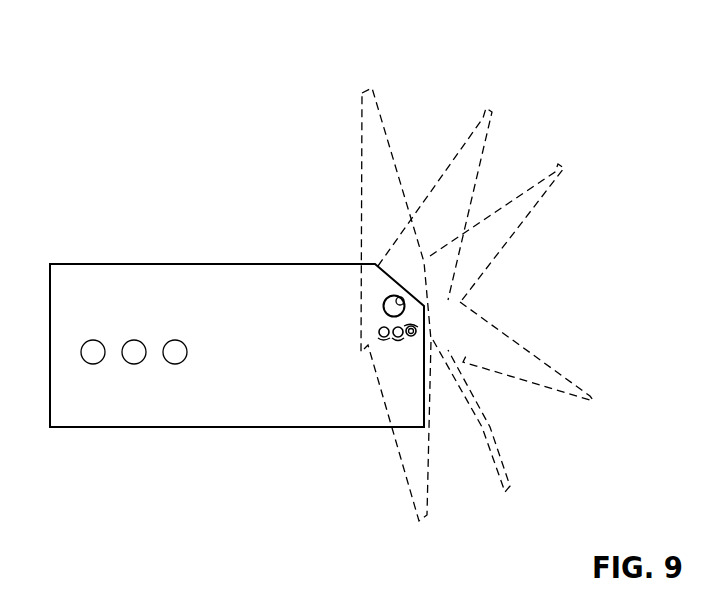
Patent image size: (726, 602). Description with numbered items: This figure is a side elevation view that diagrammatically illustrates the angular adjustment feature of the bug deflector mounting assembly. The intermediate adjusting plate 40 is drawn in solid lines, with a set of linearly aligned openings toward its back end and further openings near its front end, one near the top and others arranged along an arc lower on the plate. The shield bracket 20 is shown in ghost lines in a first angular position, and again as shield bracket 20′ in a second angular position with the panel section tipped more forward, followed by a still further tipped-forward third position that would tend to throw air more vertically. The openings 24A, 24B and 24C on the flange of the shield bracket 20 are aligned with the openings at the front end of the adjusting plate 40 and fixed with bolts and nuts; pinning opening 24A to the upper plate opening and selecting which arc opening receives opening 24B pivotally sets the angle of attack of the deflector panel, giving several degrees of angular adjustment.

The shield bracket 20 is at (380, 118).
The shield bracket in second angular position 20′ is at (493, 127).
The intermediate adjusting plate 40 is at (175, 250).
The opening 24A is at (384, 337).
The opening 24B is at (398, 337).
The opening 24C is at (416, 331).